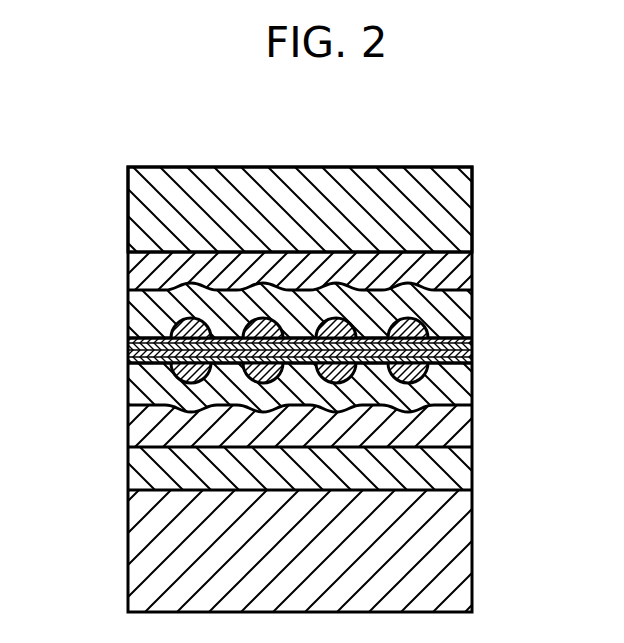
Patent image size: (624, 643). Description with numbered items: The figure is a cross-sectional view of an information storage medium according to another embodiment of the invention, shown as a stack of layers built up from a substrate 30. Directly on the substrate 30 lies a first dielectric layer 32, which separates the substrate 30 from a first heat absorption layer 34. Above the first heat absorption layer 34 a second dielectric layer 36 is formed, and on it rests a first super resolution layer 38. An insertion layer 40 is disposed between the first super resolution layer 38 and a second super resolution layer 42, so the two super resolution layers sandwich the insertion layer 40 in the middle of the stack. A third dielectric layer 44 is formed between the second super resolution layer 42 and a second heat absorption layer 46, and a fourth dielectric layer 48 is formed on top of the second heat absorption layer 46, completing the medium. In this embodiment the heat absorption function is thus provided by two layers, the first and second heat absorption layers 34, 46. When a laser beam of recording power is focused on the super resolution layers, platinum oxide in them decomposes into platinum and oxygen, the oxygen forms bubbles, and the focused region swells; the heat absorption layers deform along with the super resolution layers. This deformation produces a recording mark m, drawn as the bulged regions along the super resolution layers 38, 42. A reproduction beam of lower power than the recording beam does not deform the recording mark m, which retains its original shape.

The substrate 30 is at (457, 548).
The first dielectric layer 32 is at (452, 468).
The first heat absorption layer 34 is at (457, 427).
The second dielectric layer 36 is at (455, 388).
The first super resolution layer 38 is at (473, 363).
The insertion layer 40 is at (473, 350).
The second super resolution layer 42 is at (472, 333).
The third dielectric layer 44 is at (455, 305).
The second heat absorption layer 46 is at (450, 268).
The fourth dielectric layer 48 is at (450, 211).
The recording mark m is at (178, 326).